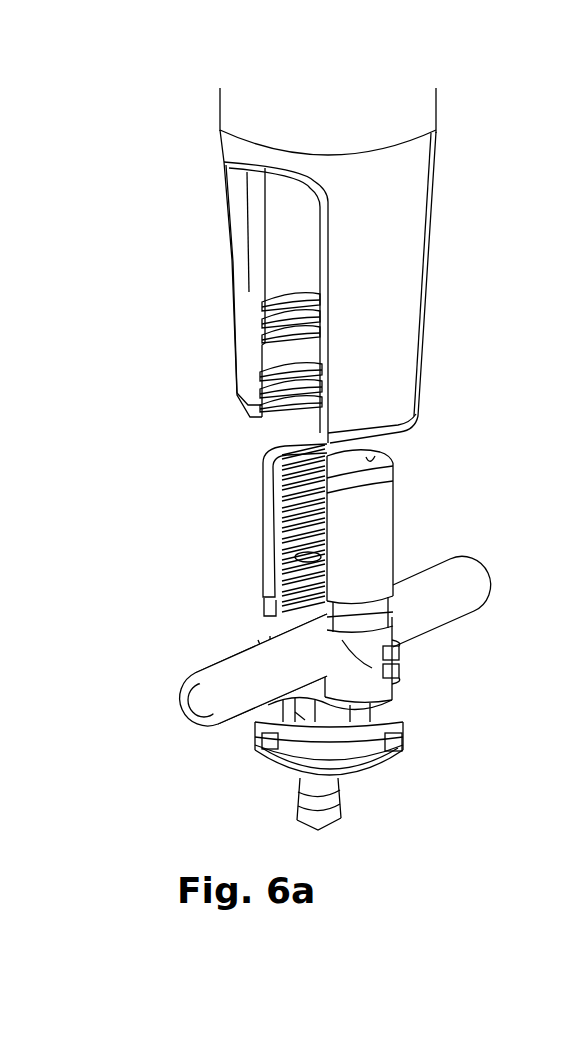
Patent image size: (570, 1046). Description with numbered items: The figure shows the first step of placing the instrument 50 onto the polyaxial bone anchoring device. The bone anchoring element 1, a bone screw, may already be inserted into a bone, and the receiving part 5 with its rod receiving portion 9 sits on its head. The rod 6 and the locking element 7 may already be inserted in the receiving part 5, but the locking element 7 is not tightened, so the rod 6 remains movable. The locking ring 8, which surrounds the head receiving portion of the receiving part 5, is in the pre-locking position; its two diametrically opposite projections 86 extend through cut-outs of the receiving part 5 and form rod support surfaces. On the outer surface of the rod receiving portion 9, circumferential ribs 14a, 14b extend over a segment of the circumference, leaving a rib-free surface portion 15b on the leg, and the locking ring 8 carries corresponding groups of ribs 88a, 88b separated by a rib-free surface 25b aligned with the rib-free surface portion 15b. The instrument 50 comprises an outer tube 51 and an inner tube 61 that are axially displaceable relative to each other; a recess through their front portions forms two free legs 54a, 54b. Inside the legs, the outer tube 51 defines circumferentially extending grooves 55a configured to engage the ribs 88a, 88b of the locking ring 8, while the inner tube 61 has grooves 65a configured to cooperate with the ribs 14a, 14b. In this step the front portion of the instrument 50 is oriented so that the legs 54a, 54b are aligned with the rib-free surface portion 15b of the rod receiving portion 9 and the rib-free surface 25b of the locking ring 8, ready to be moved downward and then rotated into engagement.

The instrument 50 is at (455, 119).
The outer tube 51 is at (221, 105).
The inner tube 61 is at (274, 230).
The free leg 54a is at (232, 255).
The free leg 54b is at (425, 242).
The groove 65a is at (262, 320).
The groove 55a is at (262, 388).
The fixation element 7 is at (300, 566).
The receiving part 5 is at (402, 533).
The rod 6 is at (470, 612).
The rod receiving portion 9 is at (260, 606).
The circumferential rib 14a is at (257, 638).
The circumferential rib 14b is at (398, 662).
The rib-free surface portion 15b is at (356, 660).
The rib-free surface 25b is at (370, 754).
The locking ring 8 is at (295, 755).
The ribs 88a is at (258, 750).
The ribs 88b is at (402, 748).
The projection 86 is at (300, 716).
The bone anchoring element 1 is at (347, 819).